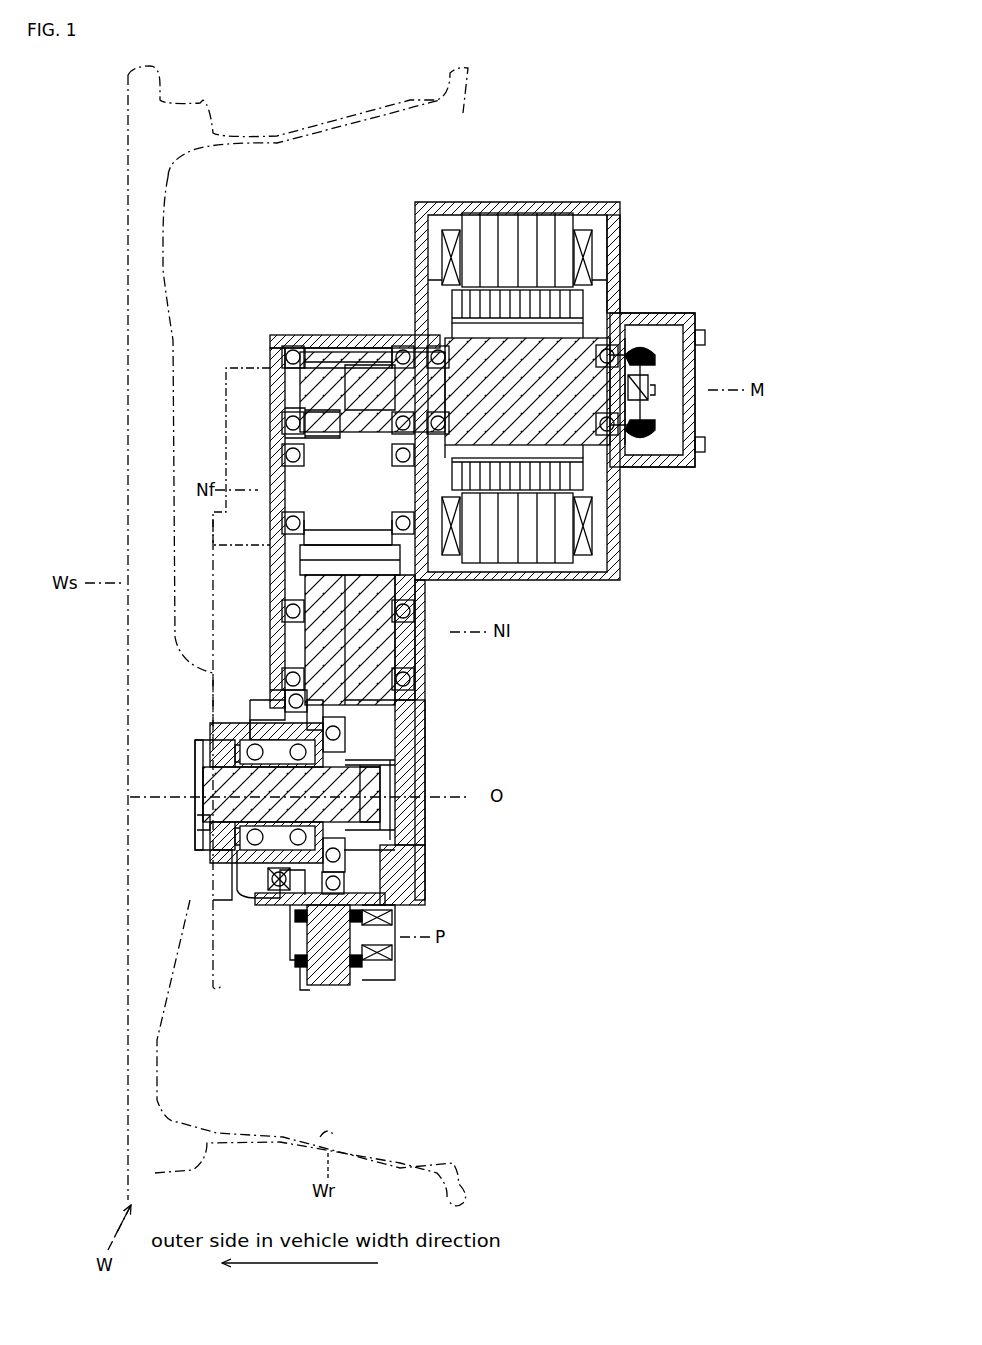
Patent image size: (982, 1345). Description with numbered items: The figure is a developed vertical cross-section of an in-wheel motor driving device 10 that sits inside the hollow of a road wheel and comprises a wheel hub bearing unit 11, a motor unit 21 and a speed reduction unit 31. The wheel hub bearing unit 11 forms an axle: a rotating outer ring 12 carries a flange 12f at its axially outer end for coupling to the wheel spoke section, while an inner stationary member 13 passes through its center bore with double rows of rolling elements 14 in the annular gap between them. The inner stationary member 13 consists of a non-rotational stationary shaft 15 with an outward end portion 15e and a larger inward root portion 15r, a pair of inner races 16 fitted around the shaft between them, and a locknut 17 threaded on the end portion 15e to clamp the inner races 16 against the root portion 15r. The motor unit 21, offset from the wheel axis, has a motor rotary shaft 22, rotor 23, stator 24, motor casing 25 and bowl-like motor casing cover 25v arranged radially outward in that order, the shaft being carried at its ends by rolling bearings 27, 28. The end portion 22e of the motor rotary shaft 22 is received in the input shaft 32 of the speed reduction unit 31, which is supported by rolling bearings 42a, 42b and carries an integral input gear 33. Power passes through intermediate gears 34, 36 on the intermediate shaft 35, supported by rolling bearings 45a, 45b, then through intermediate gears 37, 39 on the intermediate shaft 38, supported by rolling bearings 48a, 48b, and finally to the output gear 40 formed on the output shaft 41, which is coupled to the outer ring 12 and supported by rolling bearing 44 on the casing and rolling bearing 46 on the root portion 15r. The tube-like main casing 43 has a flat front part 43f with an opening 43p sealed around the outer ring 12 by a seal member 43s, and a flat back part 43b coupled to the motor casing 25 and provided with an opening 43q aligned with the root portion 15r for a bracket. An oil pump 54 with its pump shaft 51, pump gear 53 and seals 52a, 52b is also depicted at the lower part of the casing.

The in-wheel motor driving device 10 is at (632, 182).
The wheel hub bearing unit 11 is at (180, 690).
The outer ring 12 is at (195, 838).
The flange 12f is at (230, 900).
The inner stationary member 13 is at (192, 782).
The rolling elements 14 is at (340, 838).
The stationary shaft 15 is at (392, 782).
The end portion 15e is at (205, 790).
The root portion 15r is at (392, 808).
The inner races 16 is at (380, 742).
The locknut 17 is at (200, 822).
The motor unit 21 is at (572, 203).
The motor rotary shaft 22 is at (610, 445).
The end portion 22e is at (362, 352).
The rotor 23 is at (568, 305).
The stator 24 is at (568, 221).
The motor casing 25 is at (508, 210).
The motor casing cover 25v is at (617, 263).
The rolling bearing 27 is at (520, 440).
The rolling bearing 28 is at (622, 470).
The speed reduction unit 31 is at (268, 392).
The input shaft 32 is at (283, 368).
The input gear 33 is at (318, 348).
The intermediate gear 34 is at (282, 442).
The intermediate shaft 35 is at (290, 480).
The intermediate gear 36 is at (450, 480).
The intermediate gear 37 is at (425, 648).
The intermediate shaft 38 is at (305, 632).
The intermediate gear 39 is at (298, 575).
The output gear 40 is at (398, 718).
The output shaft 41 is at (262, 730).
The rolling bearing 42a is at (292, 348).
The rolling bearing 42b is at (400, 348).
The main casing 43 is at (270, 342).
The back part 43b is at (428, 686).
The front part 43f is at (283, 422).
The opening 43p is at (268, 720).
The opening 43q is at (422, 762).
The seal member 43s is at (280, 918).
The rolling bearing 44 is at (325, 935).
The rolling bearing 45a is at (280, 550).
The rolling bearing 45b is at (422, 585).
The rolling bearing 46 is at (410, 872).
The rolling bearing 48a is at (285, 612).
The rolling bearing 48b is at (422, 615).
The pump shaft 51 is at (265, 960).
The seal 52a is at (295, 945).
The seal 52b is at (352, 970).
The pump gear 53 is at (315, 960).
The oil pump 54 is at (372, 960).